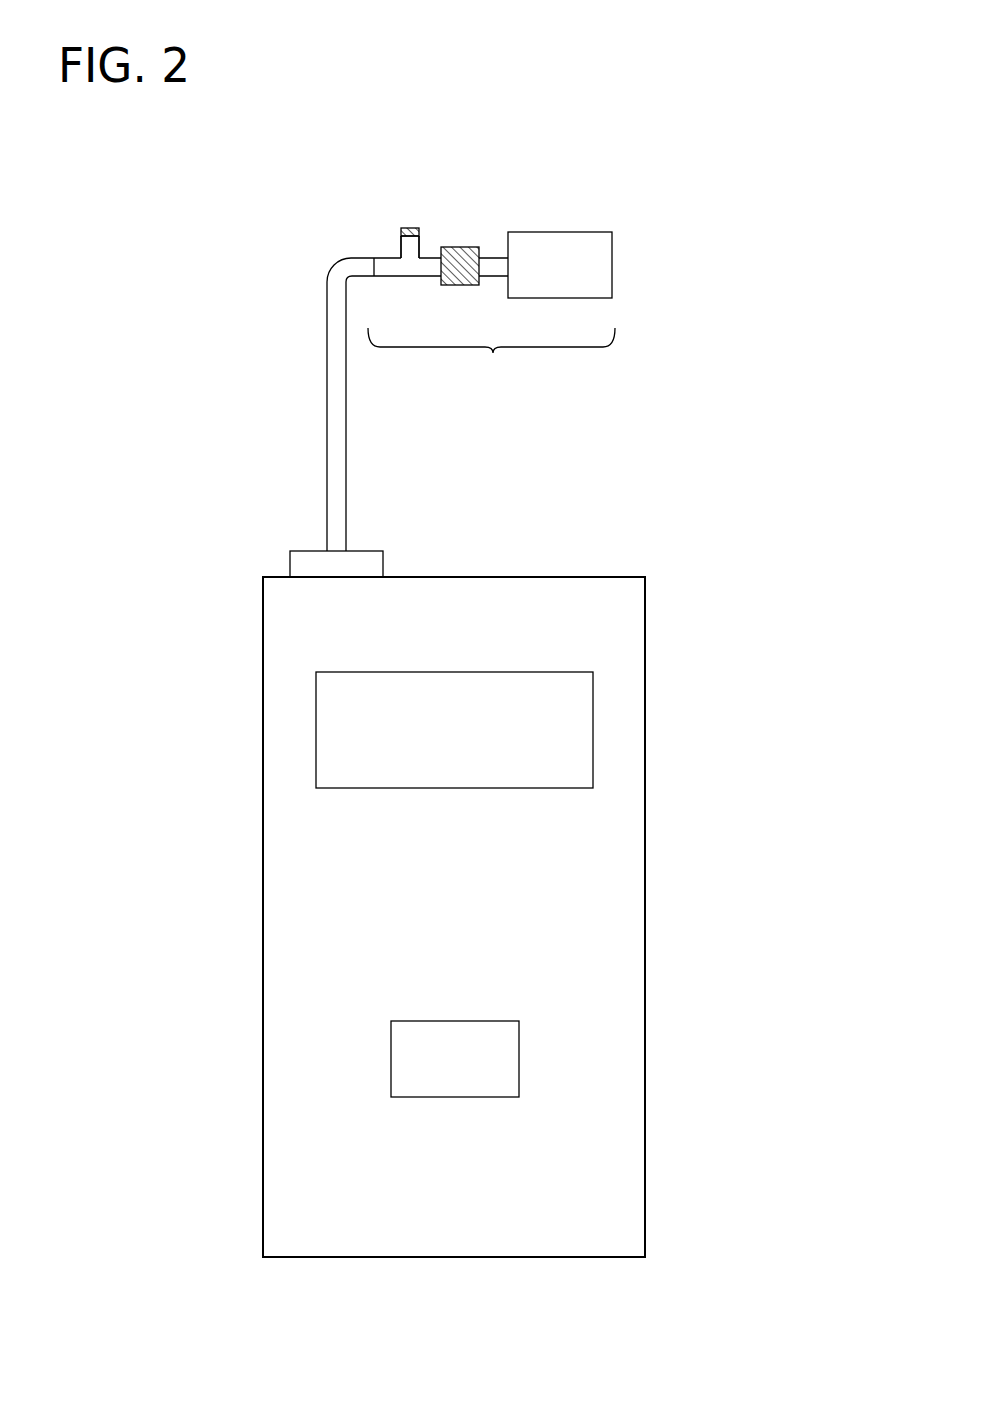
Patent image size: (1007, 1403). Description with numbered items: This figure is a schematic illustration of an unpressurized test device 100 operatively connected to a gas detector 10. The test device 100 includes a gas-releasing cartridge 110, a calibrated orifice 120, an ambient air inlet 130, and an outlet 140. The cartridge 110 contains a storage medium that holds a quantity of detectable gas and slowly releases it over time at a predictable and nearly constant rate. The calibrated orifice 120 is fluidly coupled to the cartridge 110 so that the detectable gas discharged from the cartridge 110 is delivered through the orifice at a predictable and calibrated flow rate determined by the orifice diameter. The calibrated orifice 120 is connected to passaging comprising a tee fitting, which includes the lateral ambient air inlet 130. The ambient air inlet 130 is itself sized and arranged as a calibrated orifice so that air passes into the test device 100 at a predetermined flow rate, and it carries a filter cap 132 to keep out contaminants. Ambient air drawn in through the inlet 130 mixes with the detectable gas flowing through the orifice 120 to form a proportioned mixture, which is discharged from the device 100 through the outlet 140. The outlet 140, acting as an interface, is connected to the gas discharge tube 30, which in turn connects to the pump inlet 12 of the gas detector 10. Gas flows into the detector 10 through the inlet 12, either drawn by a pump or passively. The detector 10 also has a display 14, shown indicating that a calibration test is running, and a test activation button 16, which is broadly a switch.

The gas detector 10 is at (616, 918).
The pump inlet 12 is at (308, 549).
The display 14 is at (578, 705).
The test activation button 16 is at (519, 1060).
The gas discharge tube 30 is at (333, 302).
The unpressurized test device 100 is at (491, 364).
The gas-releasing cartridge 110 is at (585, 240).
The calibrated orifice 120 is at (460, 247).
The ambient air inlet 130 is at (410, 227).
The filter cap 132 is at (413, 227).
The outlet 140 is at (387, 263).